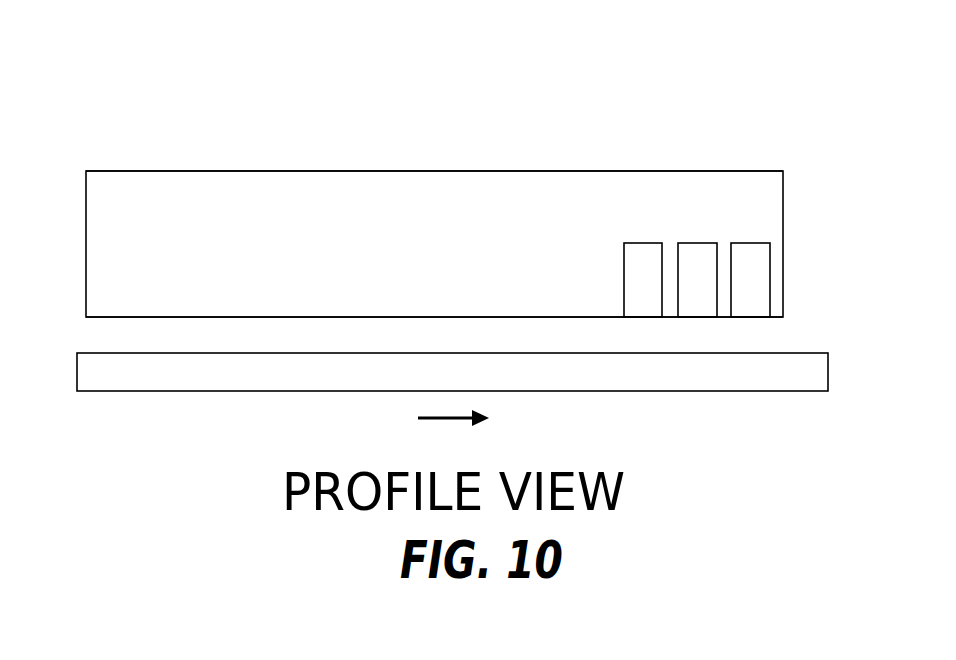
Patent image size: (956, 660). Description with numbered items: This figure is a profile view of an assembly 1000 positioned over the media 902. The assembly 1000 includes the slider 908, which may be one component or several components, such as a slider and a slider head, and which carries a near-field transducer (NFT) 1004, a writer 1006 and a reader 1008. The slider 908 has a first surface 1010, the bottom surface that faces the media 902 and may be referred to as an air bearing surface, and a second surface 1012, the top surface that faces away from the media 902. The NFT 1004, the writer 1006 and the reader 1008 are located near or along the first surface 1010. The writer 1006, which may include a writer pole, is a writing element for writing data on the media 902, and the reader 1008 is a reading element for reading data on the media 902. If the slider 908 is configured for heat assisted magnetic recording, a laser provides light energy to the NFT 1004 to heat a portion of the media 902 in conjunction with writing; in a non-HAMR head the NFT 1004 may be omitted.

The assembly 1000 is at (622, 85).
The slider 908 is at (480, 203).
The second surface 1012 is at (613, 160).
The first surface 1010 is at (82, 324).
The reader 1008 is at (650, 243).
The near-field transducer (NFT) 1004 is at (697, 243).
The writer 1006 is at (752, 243).
The media 902 is at (797, 353).